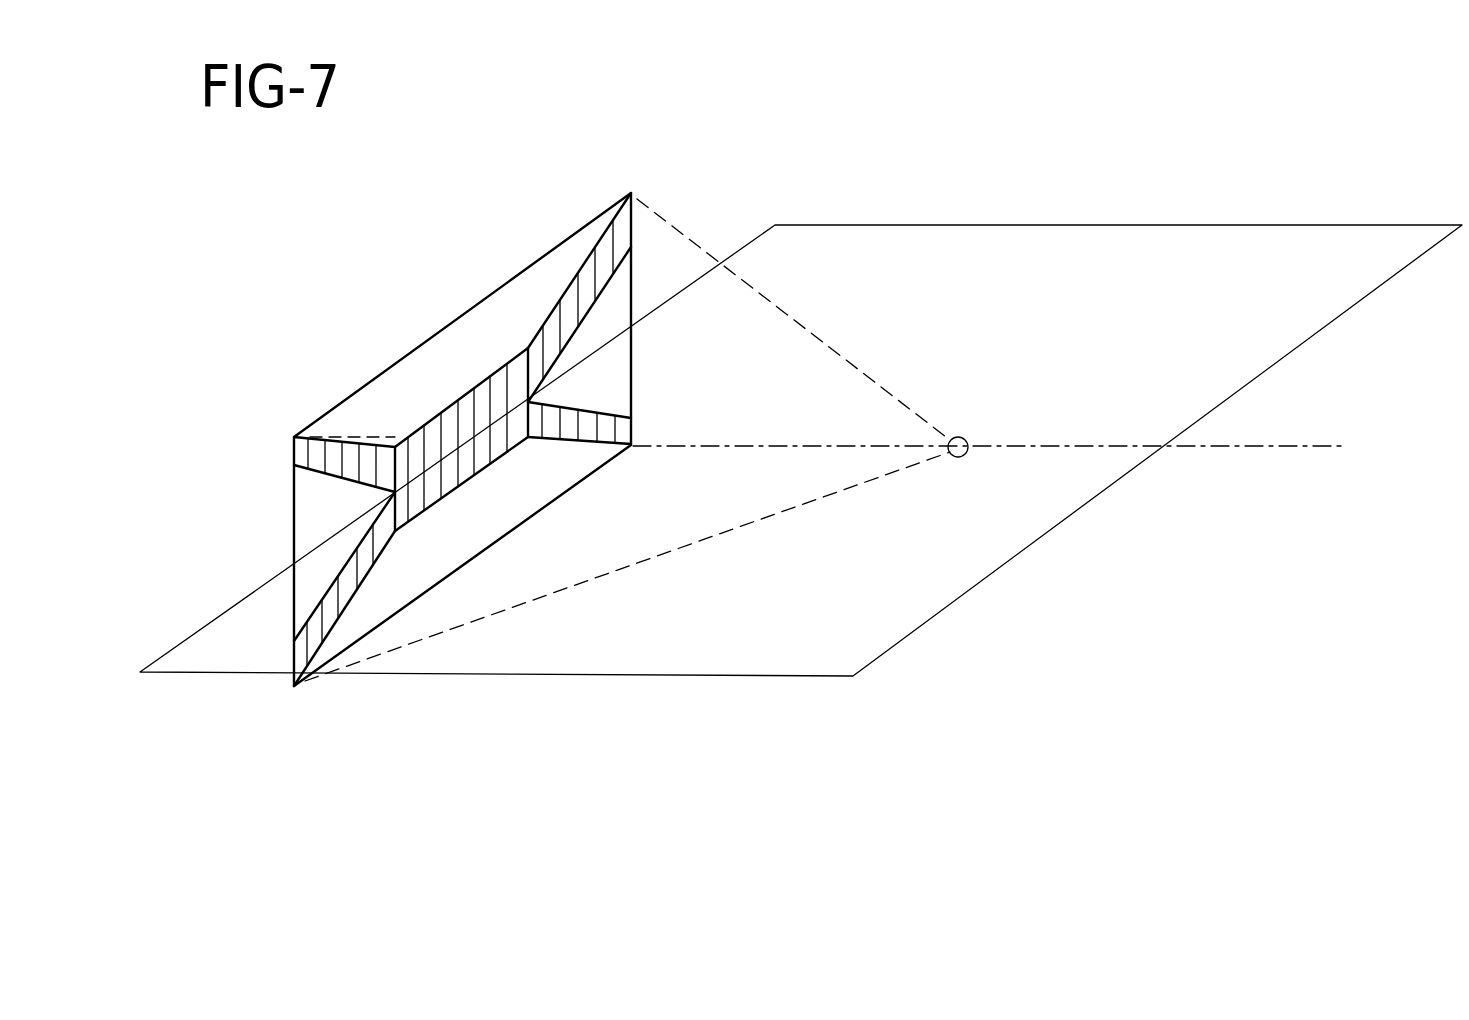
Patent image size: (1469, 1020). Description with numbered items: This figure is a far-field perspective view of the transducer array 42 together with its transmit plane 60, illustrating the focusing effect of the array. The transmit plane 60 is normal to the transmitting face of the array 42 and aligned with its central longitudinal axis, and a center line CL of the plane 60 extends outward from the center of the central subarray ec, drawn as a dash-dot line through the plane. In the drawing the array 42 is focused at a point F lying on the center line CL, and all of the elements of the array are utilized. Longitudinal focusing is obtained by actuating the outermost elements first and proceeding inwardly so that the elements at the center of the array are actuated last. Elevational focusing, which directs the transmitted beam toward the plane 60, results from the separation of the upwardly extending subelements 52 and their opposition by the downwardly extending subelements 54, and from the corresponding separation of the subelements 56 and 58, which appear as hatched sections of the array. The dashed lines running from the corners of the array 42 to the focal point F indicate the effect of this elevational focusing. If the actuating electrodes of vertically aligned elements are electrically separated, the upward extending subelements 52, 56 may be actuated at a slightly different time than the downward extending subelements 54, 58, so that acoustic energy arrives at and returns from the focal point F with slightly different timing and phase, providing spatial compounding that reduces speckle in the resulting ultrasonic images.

The array 42 is at (484, 300).
The upwardly extending subelements 52 is at (294, 452).
The downwardly extending subelements 54 is at (300, 652).
The upward extending subelements 56 is at (578, 247).
The downward extending subelements 58 is at (588, 408).
The transmit plane 60 is at (1220, 224).
The focal point F is at (965, 440).
The center line CL is at (1347, 449).
The central subarray ec is at (463, 391).